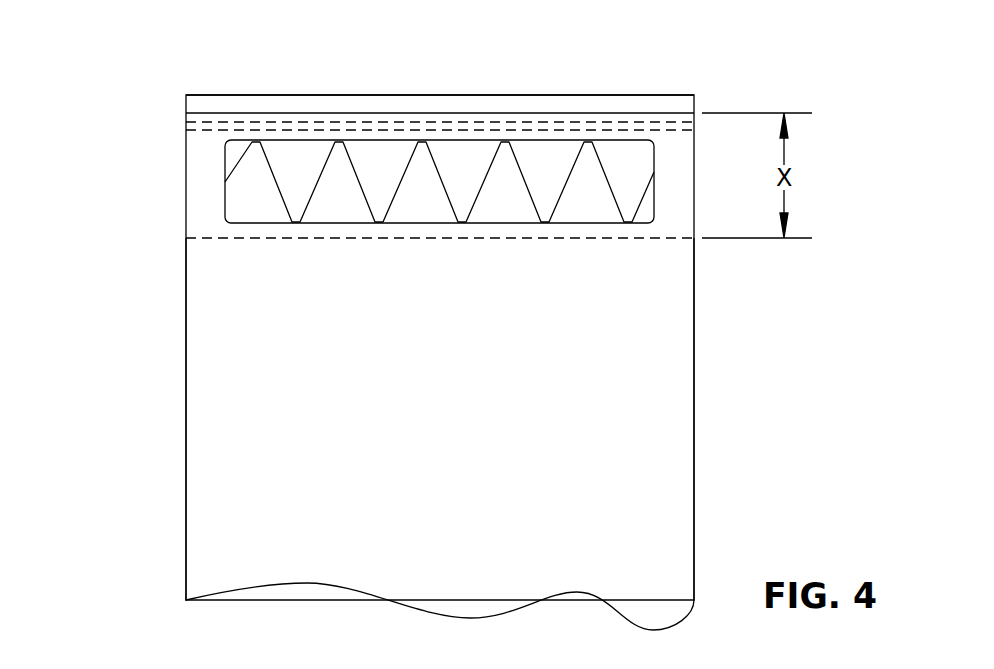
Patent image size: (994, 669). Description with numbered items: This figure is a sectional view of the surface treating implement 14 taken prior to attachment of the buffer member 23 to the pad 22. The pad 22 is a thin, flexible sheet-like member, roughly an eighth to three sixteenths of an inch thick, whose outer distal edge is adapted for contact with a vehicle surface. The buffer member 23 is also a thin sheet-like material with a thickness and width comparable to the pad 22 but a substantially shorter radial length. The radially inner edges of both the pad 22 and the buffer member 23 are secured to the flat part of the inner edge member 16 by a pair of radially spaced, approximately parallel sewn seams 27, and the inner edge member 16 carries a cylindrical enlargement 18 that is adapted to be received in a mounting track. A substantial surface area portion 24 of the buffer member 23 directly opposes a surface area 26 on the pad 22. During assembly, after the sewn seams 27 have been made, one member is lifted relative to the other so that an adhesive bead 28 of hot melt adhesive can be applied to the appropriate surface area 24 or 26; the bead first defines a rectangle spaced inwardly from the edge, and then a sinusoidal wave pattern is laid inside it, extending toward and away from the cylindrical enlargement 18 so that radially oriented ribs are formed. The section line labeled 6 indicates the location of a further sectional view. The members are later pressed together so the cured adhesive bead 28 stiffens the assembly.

The surface treating implement 14 is at (722, 428).
The inner edge member 16 is at (702, 90).
The cylindrical enlargement 18 is at (627, 102).
The pad 22 is at (652, 492).
The buffer member 23 is at (633, 238).
The surface area portion 24 is at (347, 166).
The surface area 26 is at (210, 182).
The sewn seams 27 is at (548, 118).
The adhesive bead 28 is at (443, 190).
The section line of FIG. 6 is at (502, 82).